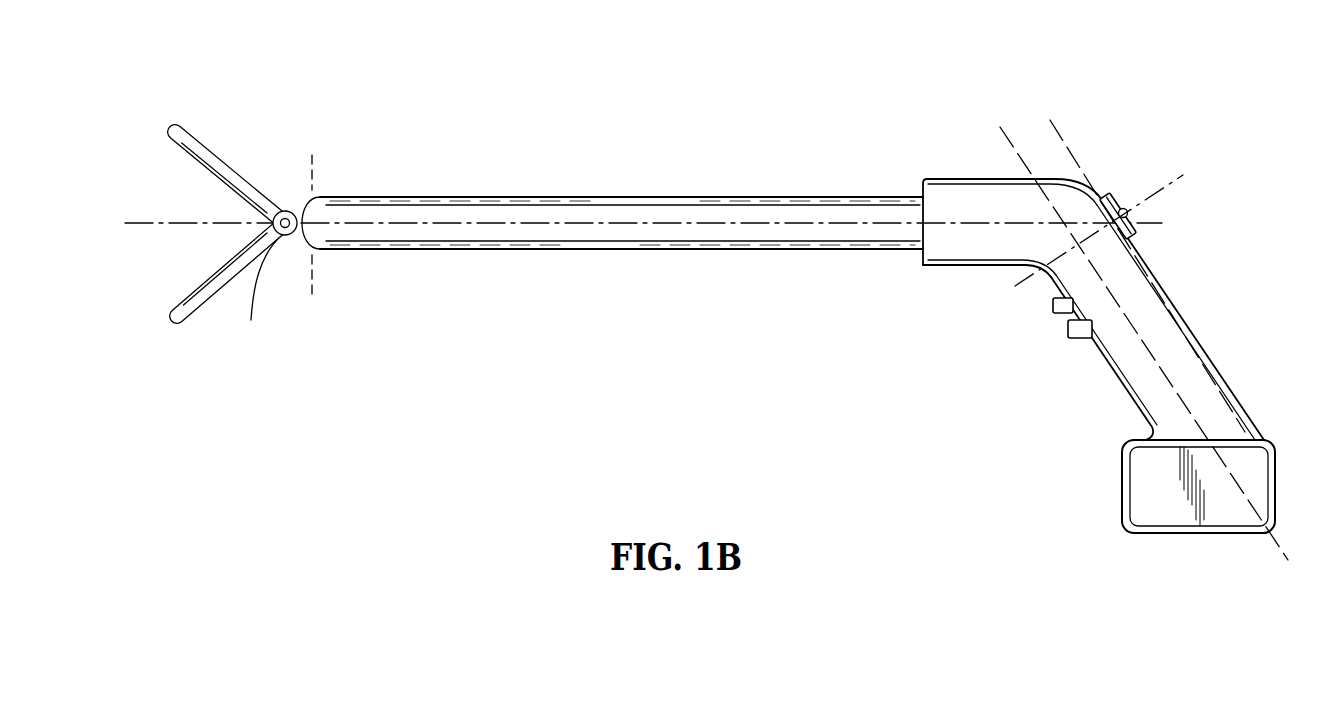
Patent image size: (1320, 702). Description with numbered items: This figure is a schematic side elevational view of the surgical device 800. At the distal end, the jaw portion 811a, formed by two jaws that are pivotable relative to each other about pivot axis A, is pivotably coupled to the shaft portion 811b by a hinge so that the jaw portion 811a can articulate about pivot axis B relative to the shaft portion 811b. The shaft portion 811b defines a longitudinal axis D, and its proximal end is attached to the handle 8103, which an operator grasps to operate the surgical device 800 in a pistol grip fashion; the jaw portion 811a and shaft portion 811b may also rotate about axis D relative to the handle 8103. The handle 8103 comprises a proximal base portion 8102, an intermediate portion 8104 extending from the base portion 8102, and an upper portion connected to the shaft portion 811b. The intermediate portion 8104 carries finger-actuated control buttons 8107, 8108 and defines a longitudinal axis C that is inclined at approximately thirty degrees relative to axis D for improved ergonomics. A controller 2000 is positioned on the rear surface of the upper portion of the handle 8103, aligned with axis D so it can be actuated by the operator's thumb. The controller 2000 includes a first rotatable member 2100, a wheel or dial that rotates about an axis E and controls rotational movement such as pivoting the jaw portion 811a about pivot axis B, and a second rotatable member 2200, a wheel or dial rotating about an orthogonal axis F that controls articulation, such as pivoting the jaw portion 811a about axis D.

The surgical device 800 is at (704, 310).
The jaw portion 811a is at (246, 152).
The shaft portion 811b is at (598, 193).
The handle 8103 is at (948, 175).
The intermediate portion 8104 is at (1118, 378).
The control button 8107 is at (1053, 304).
The control button 8108 is at (1068, 328).
The controller 2000 is at (1146, 173).
The first rotatable member 2100 is at (1112, 192).
The second rotatable member 2200 is at (1123, 208).
The base portion 8102 is at (1122, 510).